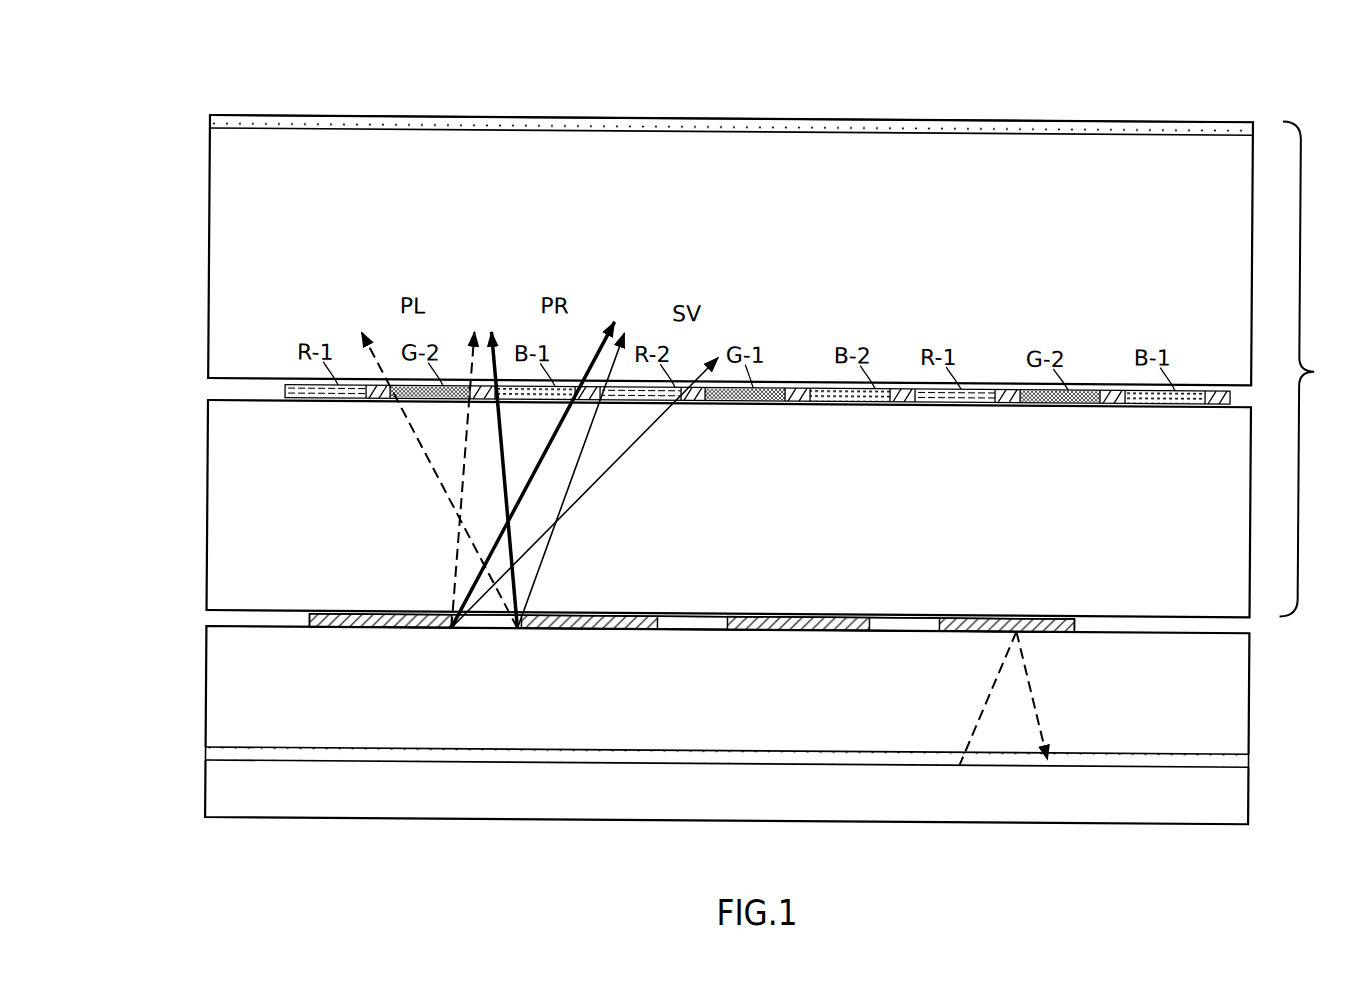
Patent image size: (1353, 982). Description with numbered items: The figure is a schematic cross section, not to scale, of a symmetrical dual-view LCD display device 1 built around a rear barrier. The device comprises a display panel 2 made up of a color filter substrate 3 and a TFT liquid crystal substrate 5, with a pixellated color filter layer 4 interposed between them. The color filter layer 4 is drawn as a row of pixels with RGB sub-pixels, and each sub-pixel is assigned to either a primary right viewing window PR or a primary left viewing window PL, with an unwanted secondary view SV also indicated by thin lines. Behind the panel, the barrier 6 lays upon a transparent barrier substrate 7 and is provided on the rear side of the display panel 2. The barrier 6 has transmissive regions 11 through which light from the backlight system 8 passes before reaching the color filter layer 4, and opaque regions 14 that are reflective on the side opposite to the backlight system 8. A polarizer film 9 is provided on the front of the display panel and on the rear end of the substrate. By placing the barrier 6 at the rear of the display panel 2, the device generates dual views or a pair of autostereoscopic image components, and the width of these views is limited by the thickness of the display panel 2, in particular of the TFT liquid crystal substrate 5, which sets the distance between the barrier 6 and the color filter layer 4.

The dual-view LCD display device 1 is at (81, 59).
The display panel 2 is at (1314, 368).
The color filter substrate 3 is at (210, 255).
The pixellated color filter layer 4 is at (289, 390).
The TFT liquid crystal substrate 5 is at (210, 504).
The barrier 6 is at (313, 619).
The transparent barrier substrate 7 is at (210, 688).
The backlight system 8 is at (210, 794).
The polarizer film 9 is at (210, 121).
The transmissive regions 11 is at (485, 626).
The opaque regions 14 is at (381, 626).